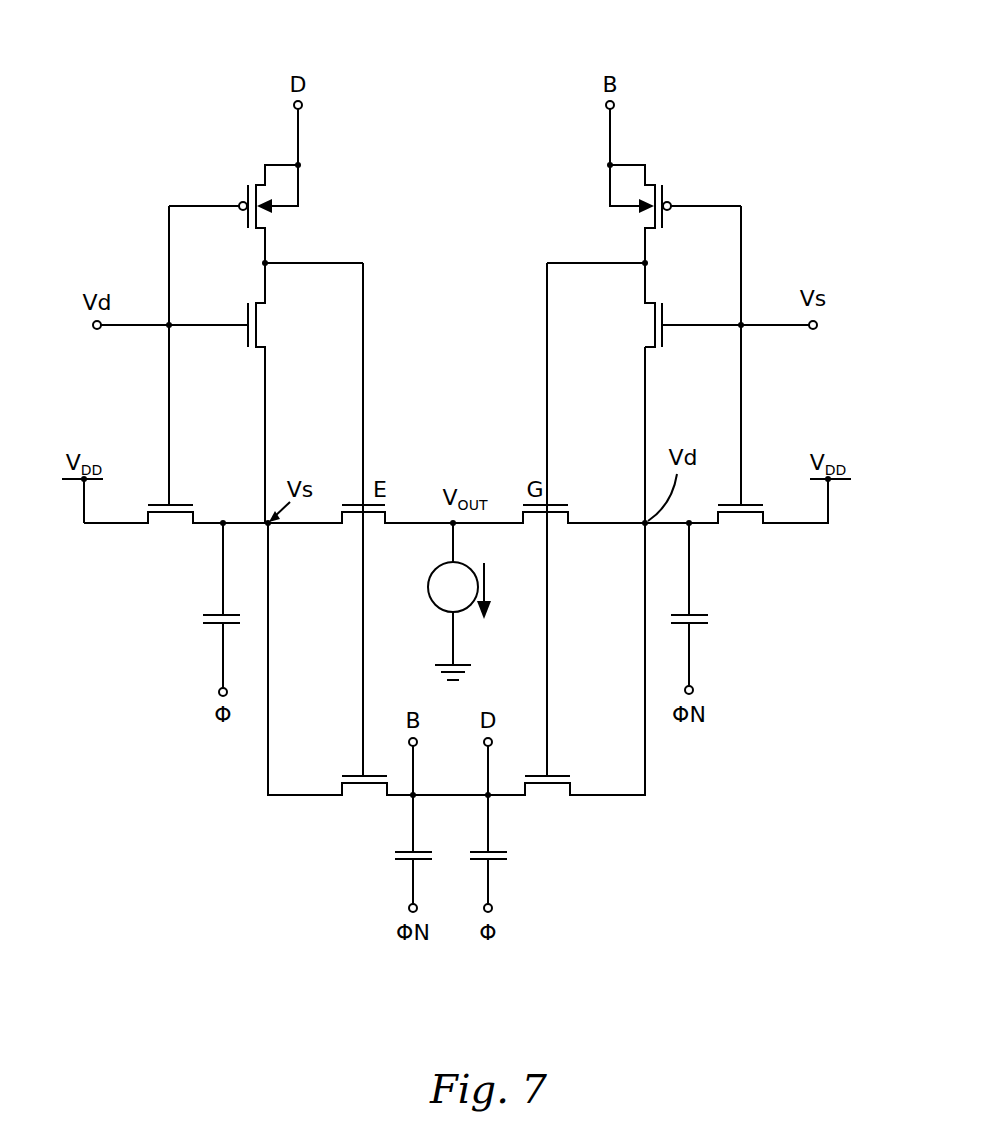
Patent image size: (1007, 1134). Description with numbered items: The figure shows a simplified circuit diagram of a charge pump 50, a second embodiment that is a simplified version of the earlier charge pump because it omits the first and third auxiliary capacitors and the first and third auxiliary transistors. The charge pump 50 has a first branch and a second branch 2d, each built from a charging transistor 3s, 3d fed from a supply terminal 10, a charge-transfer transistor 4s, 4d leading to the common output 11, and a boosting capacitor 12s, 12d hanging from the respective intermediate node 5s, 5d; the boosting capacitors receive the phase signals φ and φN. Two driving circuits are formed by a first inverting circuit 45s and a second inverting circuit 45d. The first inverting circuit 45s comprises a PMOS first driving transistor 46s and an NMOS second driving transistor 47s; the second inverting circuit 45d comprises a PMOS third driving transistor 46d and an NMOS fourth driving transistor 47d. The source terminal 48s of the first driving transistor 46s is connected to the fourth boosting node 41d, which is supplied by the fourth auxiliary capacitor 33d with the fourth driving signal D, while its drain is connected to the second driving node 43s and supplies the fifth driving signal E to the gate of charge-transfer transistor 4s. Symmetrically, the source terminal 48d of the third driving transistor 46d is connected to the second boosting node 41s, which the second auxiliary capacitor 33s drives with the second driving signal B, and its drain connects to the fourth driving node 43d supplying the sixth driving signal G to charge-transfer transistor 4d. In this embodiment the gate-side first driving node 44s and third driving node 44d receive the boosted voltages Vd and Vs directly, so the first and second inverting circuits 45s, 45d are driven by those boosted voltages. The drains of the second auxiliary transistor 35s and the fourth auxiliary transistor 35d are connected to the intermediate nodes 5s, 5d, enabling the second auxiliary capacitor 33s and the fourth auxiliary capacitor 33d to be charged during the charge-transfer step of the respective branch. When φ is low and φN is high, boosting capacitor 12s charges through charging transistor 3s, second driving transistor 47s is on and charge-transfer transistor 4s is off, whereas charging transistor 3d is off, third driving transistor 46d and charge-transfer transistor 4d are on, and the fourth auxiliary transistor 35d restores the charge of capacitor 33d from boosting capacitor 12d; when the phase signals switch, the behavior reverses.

The charge pump 50 is at (758, 92).
The second branch 2d is at (792, 436).
The power supply VDD terminal 10 is at (80, 481).
The output 11 is at (450, 521).
The charging transistor 3s is at (160, 518).
The charging transistor 3d is at (750, 518).
The charge-transfer transistor 4s is at (355, 520).
The charge-transfer transistor 4d is at (553, 518).
The intermediate node 5s is at (220, 521).
The intermediate node 5d is at (692, 521).
The boosting capacitor 12s is at (203, 620).
The boosting capacitor 12d is at (708, 622).
The second auxiliary capacitor 33s is at (400, 860).
The fourth auxiliary capacitor 33d is at (528, 862).
The second auxiliary transistor 35s is at (360, 790).
The fourth auxiliary transistor 35d is at (545, 790).
The second boosting node 41s is at (417, 794).
The fourth boosting node 41d is at (485, 797).
The second driving node 43s is at (270, 262).
The fourth driving node 43d is at (640, 262).
The first driving node 44s is at (172, 324).
The third driving node 44d is at (739, 326).
The first inverting circuit 45s is at (352, 186).
The second inverting circuit 45d is at (560, 186).
The first driving transistor 46s is at (262, 187).
The third driving transistor 46d is at (650, 187).
The second driving transistor 47s is at (259, 325).
The fourth driving transistor 47d is at (652, 325).
The source terminal 48s is at (294, 105).
The source terminal 48d is at (615, 105).